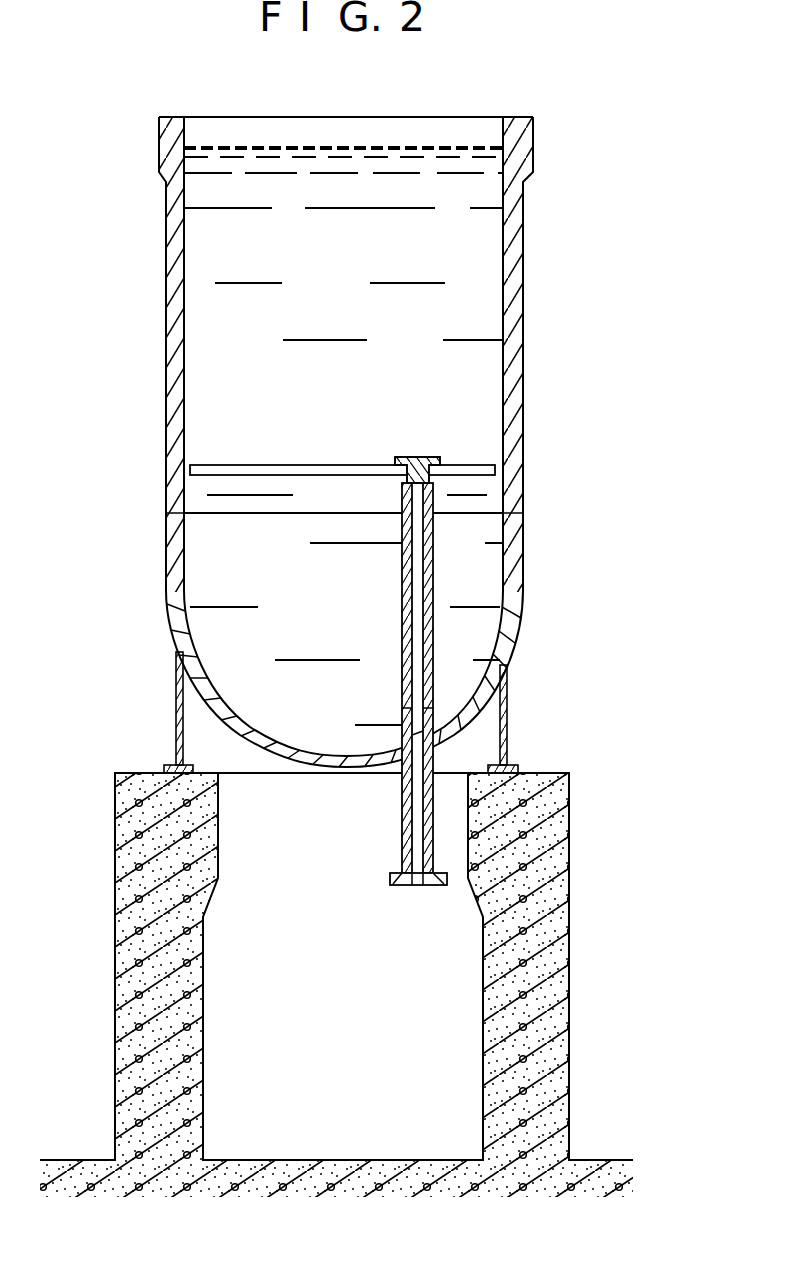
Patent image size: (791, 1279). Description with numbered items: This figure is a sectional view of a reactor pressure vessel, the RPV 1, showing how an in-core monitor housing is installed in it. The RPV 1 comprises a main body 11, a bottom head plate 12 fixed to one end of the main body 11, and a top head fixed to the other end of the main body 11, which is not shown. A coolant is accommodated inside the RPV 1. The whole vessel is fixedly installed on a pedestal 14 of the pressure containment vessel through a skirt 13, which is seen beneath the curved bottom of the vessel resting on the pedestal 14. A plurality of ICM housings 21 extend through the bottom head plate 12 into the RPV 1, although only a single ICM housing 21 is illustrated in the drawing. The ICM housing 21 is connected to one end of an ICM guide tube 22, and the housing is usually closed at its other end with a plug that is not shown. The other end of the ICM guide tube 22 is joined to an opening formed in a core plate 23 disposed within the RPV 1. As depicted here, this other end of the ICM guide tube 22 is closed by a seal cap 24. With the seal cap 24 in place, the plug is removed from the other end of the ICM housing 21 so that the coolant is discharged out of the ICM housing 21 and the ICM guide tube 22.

The RPV 1 is at (321, 442).
The main body 11 is at (173, 320).
The bottom head plate 12 is at (170, 565).
The skirt 13 is at (507, 697).
The pedestal 14 is at (570, 812).
The ICM housing 21 is at (437, 752).
The ICM guide tube 22 is at (437, 574).
The core plate 23 is at (480, 468).
The seal cap 24 is at (430, 457).